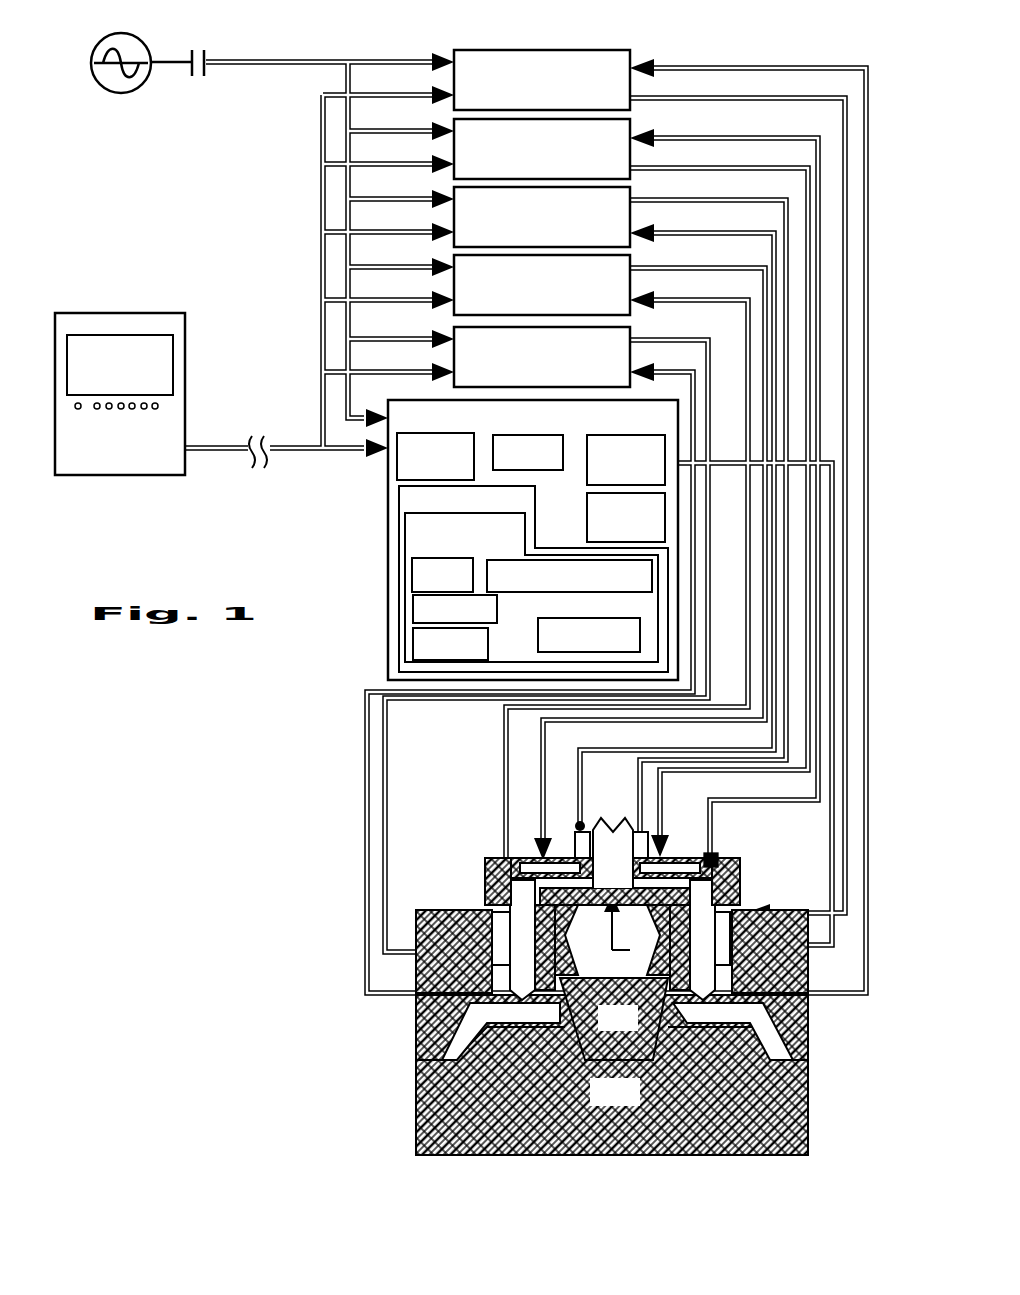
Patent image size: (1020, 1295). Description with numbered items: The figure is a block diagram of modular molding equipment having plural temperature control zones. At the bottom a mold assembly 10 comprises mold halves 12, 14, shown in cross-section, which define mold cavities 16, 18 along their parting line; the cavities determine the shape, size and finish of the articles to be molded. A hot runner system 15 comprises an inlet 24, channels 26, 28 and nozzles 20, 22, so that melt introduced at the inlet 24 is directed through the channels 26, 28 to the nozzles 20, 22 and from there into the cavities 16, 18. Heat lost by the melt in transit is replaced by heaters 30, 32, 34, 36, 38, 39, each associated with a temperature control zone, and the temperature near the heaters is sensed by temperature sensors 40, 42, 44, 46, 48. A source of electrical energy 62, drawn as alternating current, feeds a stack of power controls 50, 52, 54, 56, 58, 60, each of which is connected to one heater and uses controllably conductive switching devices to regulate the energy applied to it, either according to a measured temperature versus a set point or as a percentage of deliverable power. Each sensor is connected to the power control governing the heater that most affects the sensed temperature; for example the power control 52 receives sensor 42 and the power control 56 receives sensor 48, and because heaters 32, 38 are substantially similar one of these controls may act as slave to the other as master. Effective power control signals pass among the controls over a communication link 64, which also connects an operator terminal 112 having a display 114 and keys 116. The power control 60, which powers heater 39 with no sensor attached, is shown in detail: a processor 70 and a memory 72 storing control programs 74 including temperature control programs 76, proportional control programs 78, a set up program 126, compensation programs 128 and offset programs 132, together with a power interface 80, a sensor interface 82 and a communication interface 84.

The mold assembly 10 is at (580, 958).
The mold half 12 is at (614, 1019).
The mold half 14 is at (612, 1075).
The hot runner system 15 is at (462, 795).
The mold cavity 16 is at (420, 1030).
The mold cavity 18 is at (790, 1025).
The nozzle 20 is at (440, 993).
The nozzle 22 is at (790, 990).
The inlet 24 is at (628, 826).
The channel 26 is at (725, 860).
The channel 28 is at (548, 890).
The heater 30 is at (636, 830).
The heater 32 is at (672, 866).
The heater 34 is at (740, 885).
The heater 36 is at (520, 930).
The heater 38 is at (530, 866).
The heater 39 is at (650, 900).
The temperature sensor 40 is at (575, 840).
The temperature sensor 42 is at (672, 868).
The temperature sensor 44 is at (768, 1018).
The temperature sensor 46 is at (480, 1012).
The temperature sensor 48 is at (500, 862).
The power control 50 is at (470, 56).
The power control 52 is at (470, 128).
The power control 54 is at (480, 192).
The power control 56 is at (478, 264).
The power control 58 is at (484, 337).
The power control 60 is at (506, 528).
The source of electrical energy 62 is at (112, 88).
The communication link 64 is at (322, 456).
The processor 70 is at (535, 468).
The memory 72 is at (410, 502).
The control programs 74 is at (412, 530).
The temperature control programs 76 is at (418, 576).
The proportional control programs 78 is at (552, 652).
The power interface 80 is at (598, 448).
The sensor interface 82 is at (600, 520).
The communication interface 84 is at (468, 440).
The operator terminal 112 is at (161, 394).
The display 114 is at (120, 365).
The keys 116 is at (132, 408).
The set up program 126 is at (430, 648).
The compensation programs 128 is at (540, 593).
The offset programs 132 is at (430, 612).